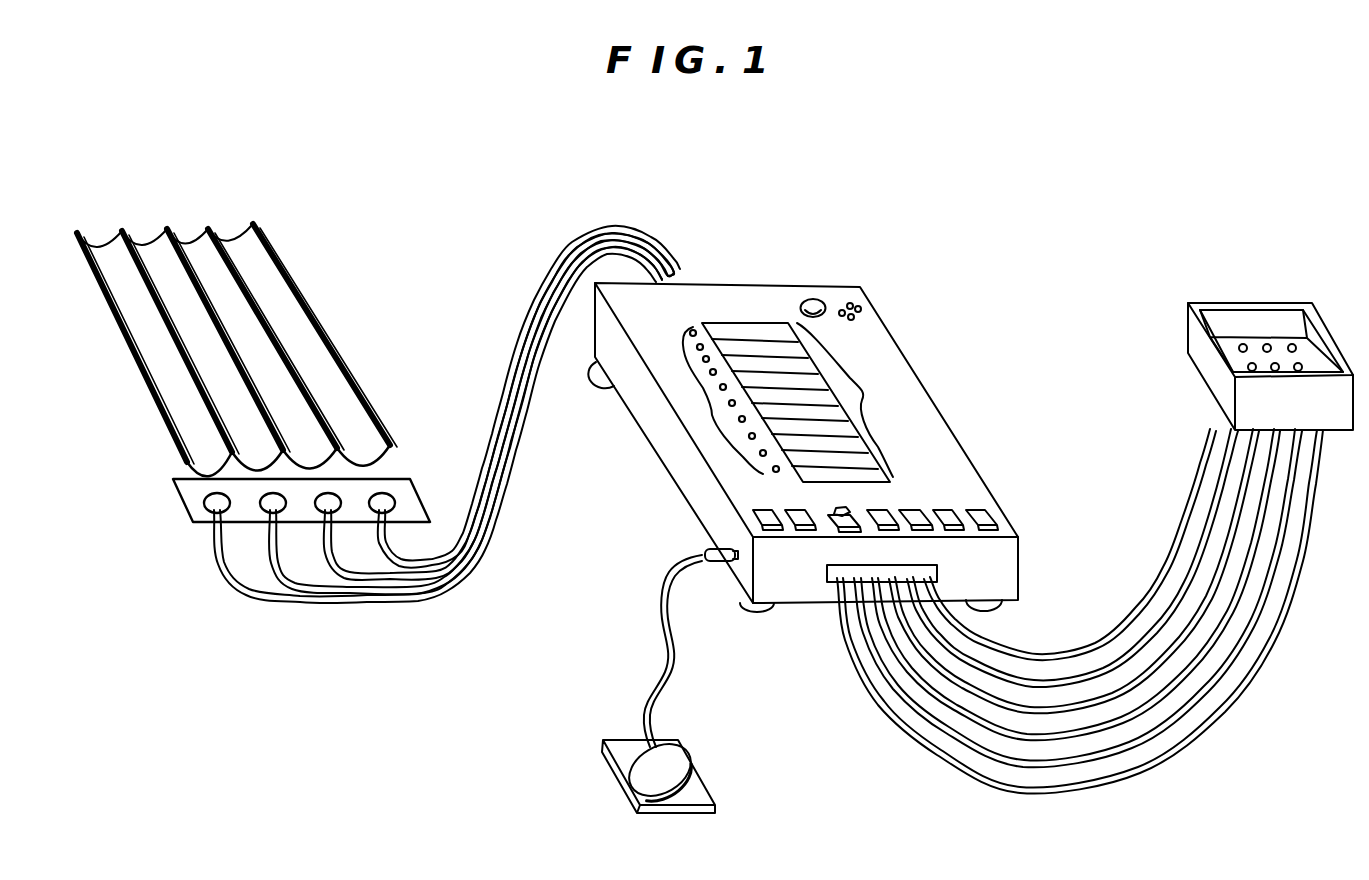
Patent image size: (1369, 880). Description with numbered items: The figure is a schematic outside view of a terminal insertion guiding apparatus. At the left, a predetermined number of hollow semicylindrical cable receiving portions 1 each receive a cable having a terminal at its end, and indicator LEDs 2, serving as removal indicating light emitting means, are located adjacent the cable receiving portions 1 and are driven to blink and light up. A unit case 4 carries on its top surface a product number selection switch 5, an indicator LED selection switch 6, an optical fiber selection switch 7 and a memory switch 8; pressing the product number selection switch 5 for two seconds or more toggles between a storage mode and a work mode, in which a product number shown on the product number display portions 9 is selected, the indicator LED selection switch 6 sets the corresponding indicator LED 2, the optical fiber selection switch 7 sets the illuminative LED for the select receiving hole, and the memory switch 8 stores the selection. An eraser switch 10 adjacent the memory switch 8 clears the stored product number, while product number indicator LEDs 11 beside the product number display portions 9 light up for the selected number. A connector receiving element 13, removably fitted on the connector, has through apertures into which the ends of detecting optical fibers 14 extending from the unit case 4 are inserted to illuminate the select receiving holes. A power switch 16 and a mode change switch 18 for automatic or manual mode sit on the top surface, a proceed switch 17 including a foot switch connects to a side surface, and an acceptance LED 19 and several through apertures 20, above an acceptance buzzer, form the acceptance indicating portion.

The cable receiving portions 1 is at (102, 253).
The indicator LEDs 2 is at (385, 505).
The unit case 4 is at (727, 287).
The product number selection switch 5 is at (805, 530).
The indicator LED selection switch 6 is at (880, 510).
The optical fiber selection switch 7 is at (913, 510).
The memory switch 8 is at (947, 508).
The product number display portions 9 is at (798, 402).
The eraser switch 10 is at (990, 512).
The product number indicator LEDs 11 is at (698, 417).
The connector receiving element 13 is at (1213, 302).
The detecting optical fibers 14 is at (1110, 698).
The power switch 16 is at (753, 515).
The proceed switch 17 is at (700, 778).
The mode change switch 18 is at (832, 532).
The acceptance LED 19 is at (817, 300).
The through apertures 20 is at (857, 290).